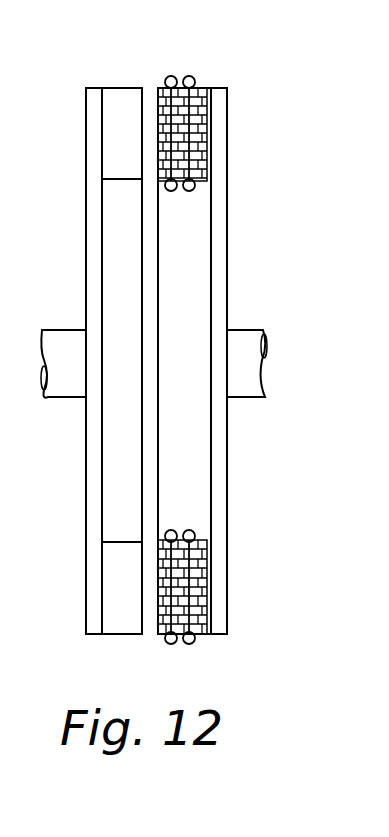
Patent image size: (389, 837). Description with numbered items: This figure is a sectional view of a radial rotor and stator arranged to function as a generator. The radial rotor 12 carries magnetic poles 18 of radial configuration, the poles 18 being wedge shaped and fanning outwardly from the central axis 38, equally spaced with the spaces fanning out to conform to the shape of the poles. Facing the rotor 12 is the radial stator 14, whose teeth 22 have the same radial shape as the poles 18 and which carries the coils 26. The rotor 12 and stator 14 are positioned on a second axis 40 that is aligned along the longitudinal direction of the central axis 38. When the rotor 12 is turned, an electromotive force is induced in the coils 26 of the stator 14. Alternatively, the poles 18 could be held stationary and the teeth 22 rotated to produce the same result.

The rotor 12 is at (80, 511).
The stator 14 is at (246, 141).
The magnetic poles 18 is at (113, 87).
The teeth 22 is at (203, 181).
The coils 26 is at (189, 77).
The central axis 38 is at (53, 335).
The second axis 40 is at (250, 333).